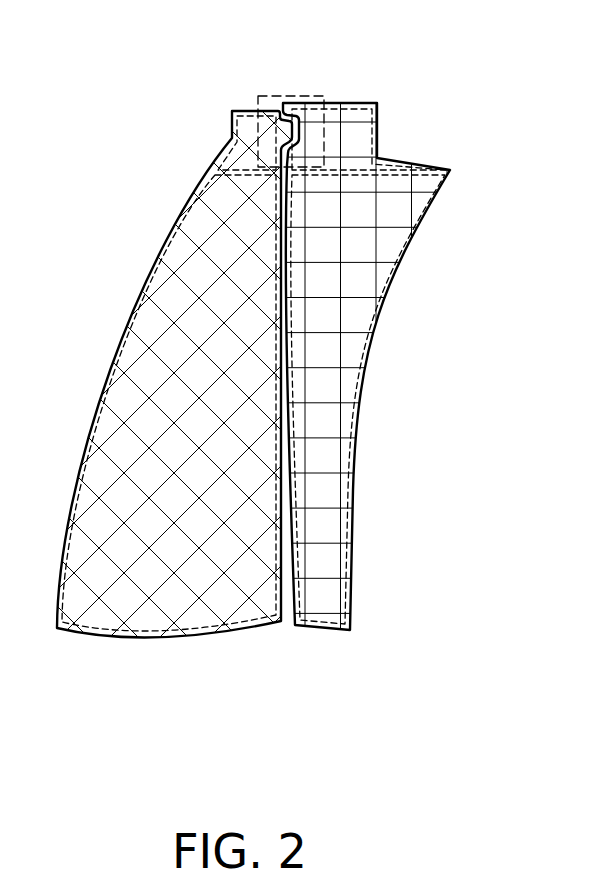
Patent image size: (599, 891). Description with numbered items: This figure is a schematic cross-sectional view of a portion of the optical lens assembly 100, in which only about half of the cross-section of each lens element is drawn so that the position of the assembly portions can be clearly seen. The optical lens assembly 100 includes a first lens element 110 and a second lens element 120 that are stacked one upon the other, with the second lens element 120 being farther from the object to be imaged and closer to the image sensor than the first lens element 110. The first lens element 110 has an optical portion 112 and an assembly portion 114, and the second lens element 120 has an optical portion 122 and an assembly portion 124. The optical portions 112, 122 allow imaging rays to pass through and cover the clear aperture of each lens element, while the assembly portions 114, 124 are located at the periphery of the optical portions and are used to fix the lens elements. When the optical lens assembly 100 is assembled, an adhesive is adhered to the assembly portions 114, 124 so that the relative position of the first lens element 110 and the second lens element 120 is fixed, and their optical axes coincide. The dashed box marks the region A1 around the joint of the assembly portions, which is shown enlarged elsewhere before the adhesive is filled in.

The optical lens assembly 100 is at (299, 371).
The first lens element 110 is at (299, 399).
The optical portion 112 is at (170, 234).
The assembly portion 114 is at (224, 150).
The second lens element 120 is at (371, 400).
The optical portion 122 is at (393, 276).
The assembly portion 124 is at (379, 142).
The region A1 is at (285, 95).